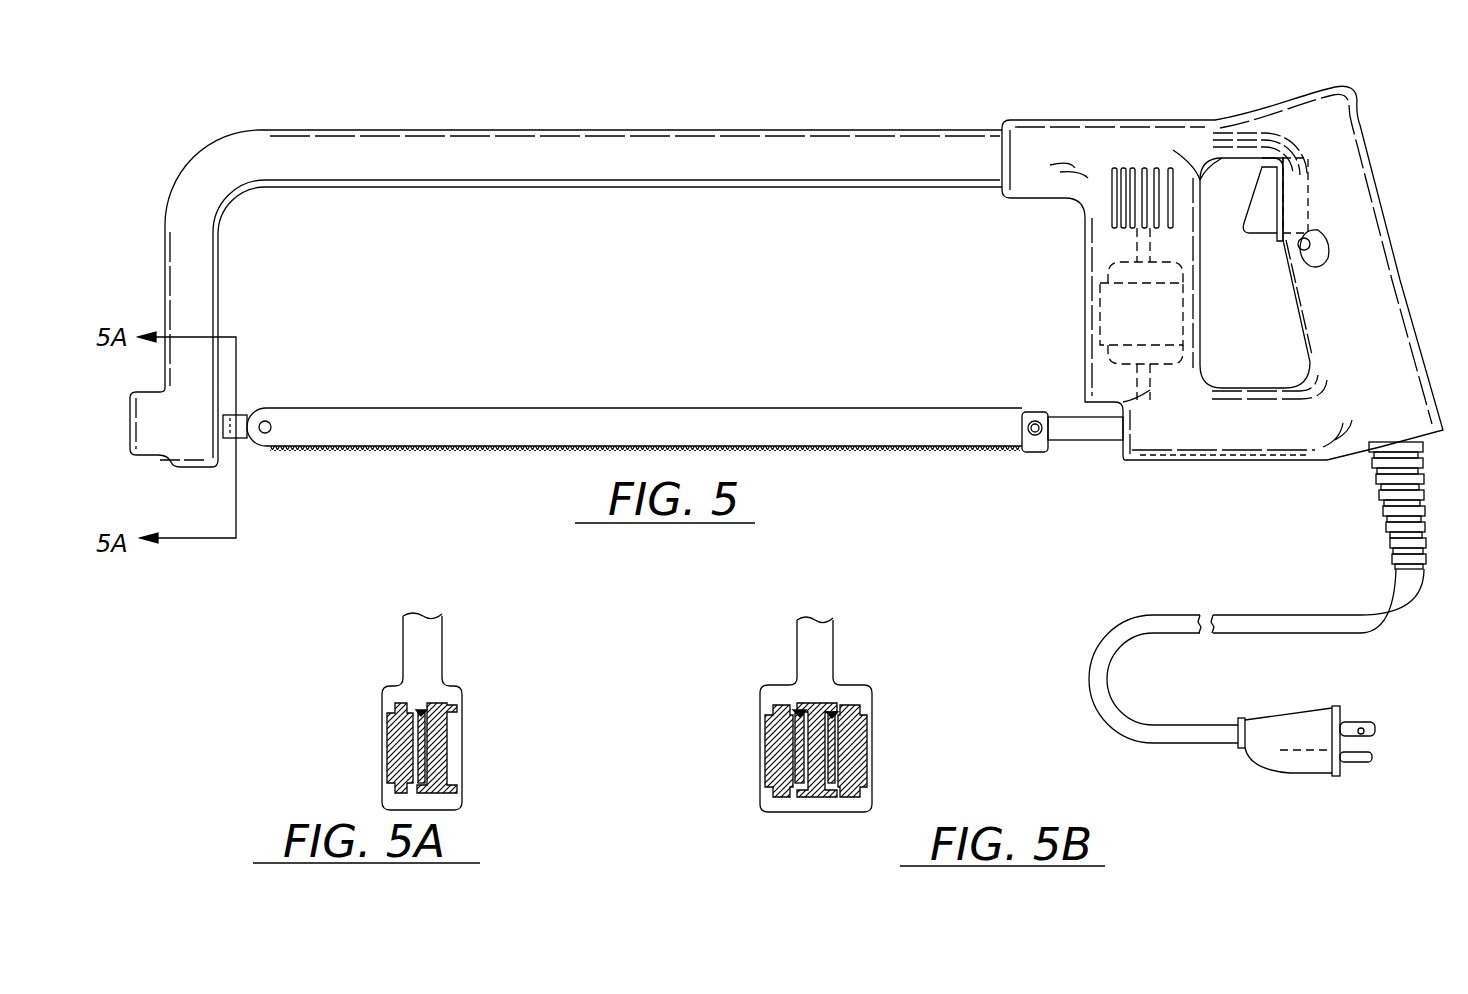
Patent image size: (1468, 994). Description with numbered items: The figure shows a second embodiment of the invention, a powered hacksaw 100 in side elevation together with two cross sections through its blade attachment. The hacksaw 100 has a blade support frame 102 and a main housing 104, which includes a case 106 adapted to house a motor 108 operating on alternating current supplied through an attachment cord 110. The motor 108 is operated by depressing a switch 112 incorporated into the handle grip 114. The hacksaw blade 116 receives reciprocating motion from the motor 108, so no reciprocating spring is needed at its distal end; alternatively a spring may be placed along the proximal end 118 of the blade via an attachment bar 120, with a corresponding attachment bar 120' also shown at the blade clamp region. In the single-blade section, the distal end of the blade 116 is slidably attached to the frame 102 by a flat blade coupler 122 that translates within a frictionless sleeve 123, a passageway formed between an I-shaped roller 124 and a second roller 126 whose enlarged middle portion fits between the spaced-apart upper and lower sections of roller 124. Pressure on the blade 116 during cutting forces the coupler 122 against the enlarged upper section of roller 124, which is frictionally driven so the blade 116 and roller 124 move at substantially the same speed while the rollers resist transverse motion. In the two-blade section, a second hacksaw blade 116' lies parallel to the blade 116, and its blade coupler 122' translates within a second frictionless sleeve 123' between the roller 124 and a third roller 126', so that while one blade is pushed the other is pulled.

In FIG. 5, the hacksaw 100 is at (866, 96).
In FIG. 5, the blade support frame 102 is at (566, 264).
In FIG. 5A, the blade support frame 102 is at (460, 698).
In FIG. 5B, the blade support frame 102 is at (827, 692).
In FIG. 5, the main housing 104 is at (1222, 260).
In FIG. 5, the case 106 is at (1104, 273).
In FIG. 5, the motor 108 is at (1085, 314).
In FIG. 5, the attachment cord 110 is at (1231, 609).
In FIG. 5, the switch 112 is at (1286, 159).
In FIG. 5, the handle grip 114 is at (1282, 274).
In FIG. 5, the hacksaw blade 116 is at (634, 399).
In FIG. 5, the second hacksaw blade 116' is at (650, 378).
In FIG. 5, the proximal end 118 is at (1128, 449).
In FIG. 5, the attachment bar 120 is at (1062, 460).
In FIG. 5, the blade clamp 120' is at (1051, 372).
In FIG. 5, the blade coupler 122 is at (277, 467).
In FIG. 5A, the blade coupler 122 is at (488, 730).
In FIG. 5B, the blade coupler 122 is at (772, 784).
In FIG. 5, the blade coupler 122' is at (276, 393).
In FIG. 5B, the blade coupler 122' is at (860, 784).
In FIG. 5A, the frictionless sleeve 123 is at (359, 684).
In FIG. 5B, the frictionless sleeve 123 is at (763, 673).
In FIG. 5B, the frictionless sleeve 123' is at (893, 698).
In FIG. 5A, the I-shaped roller 124 is at (488, 748).
In FIG. 5B, the I-shaped roller 124 is at (847, 713).
In FIG. 5A, the second roller 126 is at (352, 748).
In FIG. 5B, the second roller 126 is at (733, 752).
In FIG. 5B, the third roller 126' is at (907, 751).